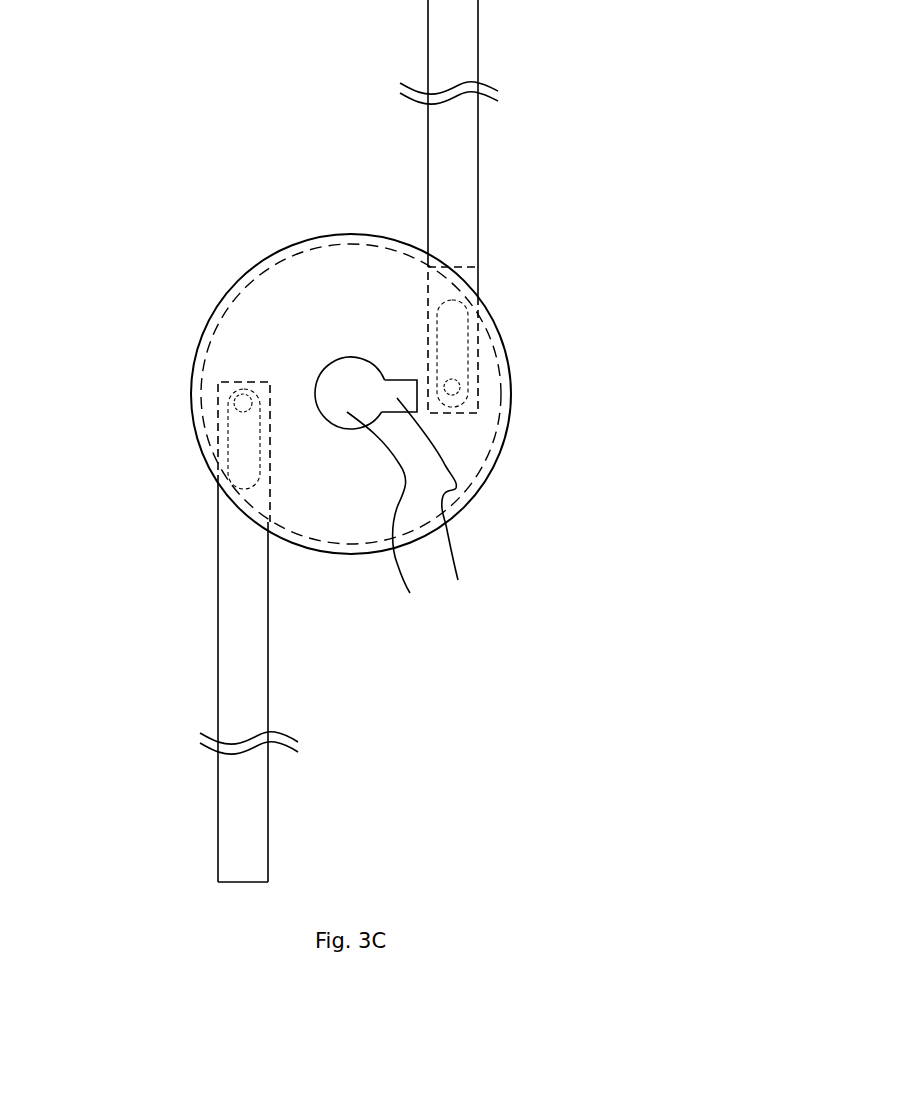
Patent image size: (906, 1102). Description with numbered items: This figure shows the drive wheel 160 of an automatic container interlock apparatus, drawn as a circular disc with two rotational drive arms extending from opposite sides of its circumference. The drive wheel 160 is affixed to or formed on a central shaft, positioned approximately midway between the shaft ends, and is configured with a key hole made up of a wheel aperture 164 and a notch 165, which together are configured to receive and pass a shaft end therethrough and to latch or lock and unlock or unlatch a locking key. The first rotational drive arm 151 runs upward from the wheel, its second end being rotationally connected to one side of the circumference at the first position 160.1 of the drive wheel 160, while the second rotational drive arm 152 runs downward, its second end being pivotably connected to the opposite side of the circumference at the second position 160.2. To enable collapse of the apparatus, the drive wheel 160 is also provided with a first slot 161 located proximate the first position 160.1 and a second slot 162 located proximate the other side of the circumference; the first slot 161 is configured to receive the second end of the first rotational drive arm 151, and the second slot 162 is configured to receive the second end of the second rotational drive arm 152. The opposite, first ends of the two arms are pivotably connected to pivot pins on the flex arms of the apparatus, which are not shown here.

The first rotational drive arm 151 is at (455, 193).
The second rotational drive arm 152 is at (243, 623).
The drive wheel 160 is at (472, 442).
The first position 160.1 is at (499, 314).
The second position 160.2 is at (184, 383).
The first slot 161 is at (465, 343).
The second slot 162 is at (227, 453).
The wheel aperture 164 is at (388, 518).
The notch 165 is at (441, 502).